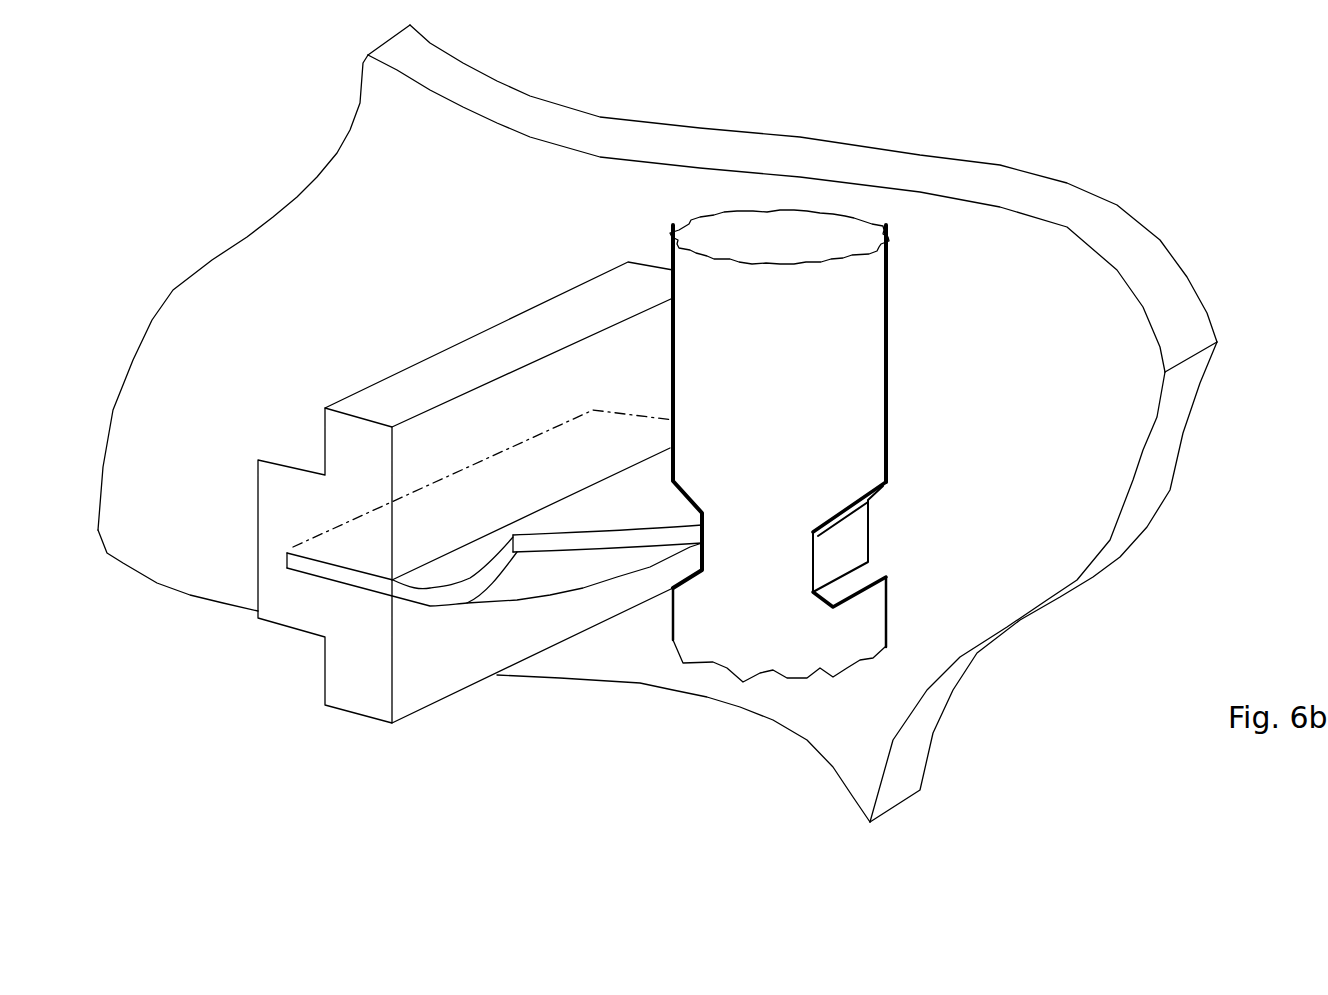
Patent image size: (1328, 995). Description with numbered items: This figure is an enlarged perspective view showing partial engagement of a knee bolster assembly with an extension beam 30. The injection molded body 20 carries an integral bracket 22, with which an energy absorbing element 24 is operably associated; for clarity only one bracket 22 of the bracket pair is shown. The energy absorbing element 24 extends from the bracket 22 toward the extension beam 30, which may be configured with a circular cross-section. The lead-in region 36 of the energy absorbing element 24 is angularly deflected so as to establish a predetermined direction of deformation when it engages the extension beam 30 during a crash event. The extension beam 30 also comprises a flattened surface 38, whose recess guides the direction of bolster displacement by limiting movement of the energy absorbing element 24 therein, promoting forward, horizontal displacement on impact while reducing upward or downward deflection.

The injection molded body 20 is at (938, 212).
The integral bracket 22 is at (283, 502).
The energy absorbing element 24 is at (462, 563).
The extension beam 30 is at (800, 448).
The lead-in region 36 is at (527, 543).
The flattened surface 38 is at (837, 550).